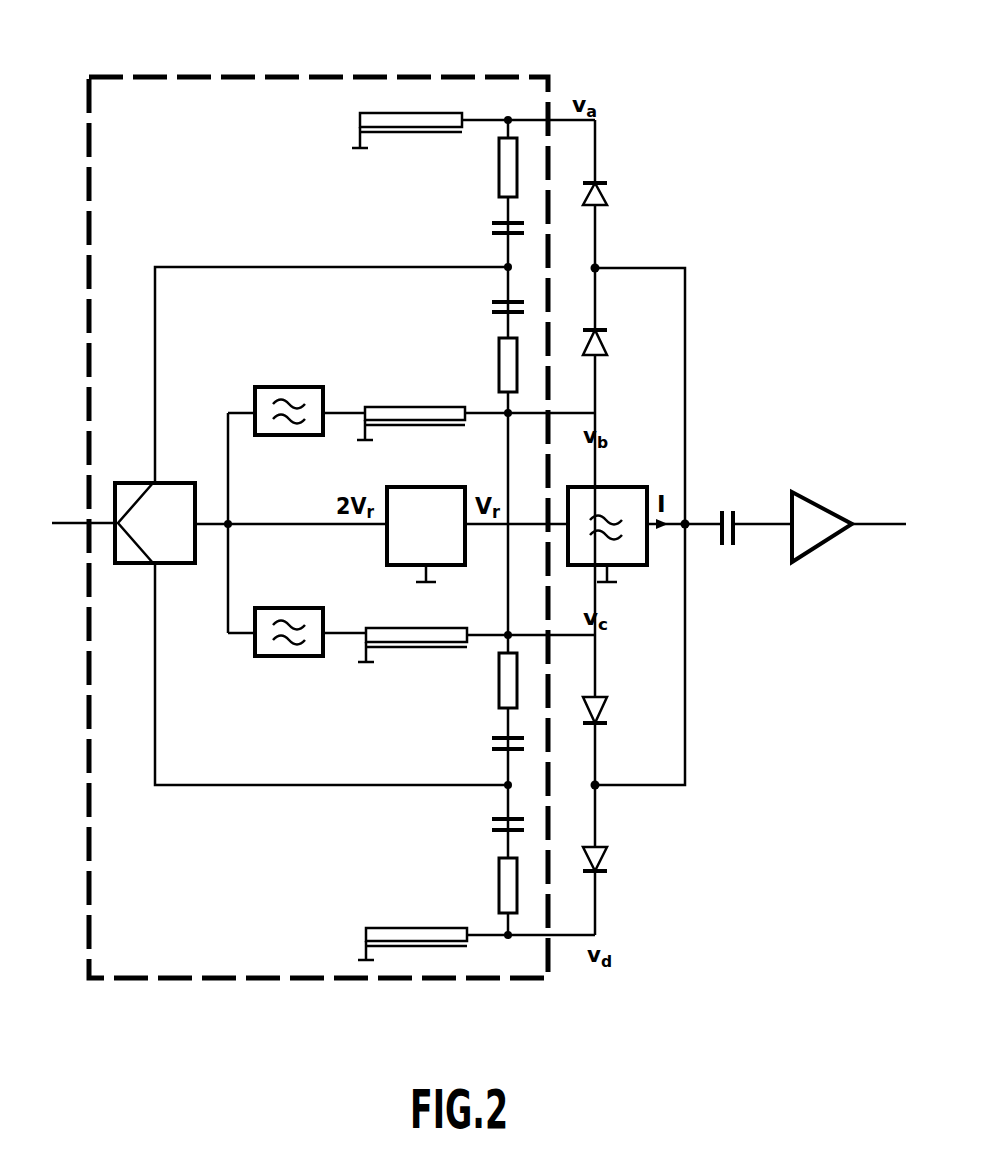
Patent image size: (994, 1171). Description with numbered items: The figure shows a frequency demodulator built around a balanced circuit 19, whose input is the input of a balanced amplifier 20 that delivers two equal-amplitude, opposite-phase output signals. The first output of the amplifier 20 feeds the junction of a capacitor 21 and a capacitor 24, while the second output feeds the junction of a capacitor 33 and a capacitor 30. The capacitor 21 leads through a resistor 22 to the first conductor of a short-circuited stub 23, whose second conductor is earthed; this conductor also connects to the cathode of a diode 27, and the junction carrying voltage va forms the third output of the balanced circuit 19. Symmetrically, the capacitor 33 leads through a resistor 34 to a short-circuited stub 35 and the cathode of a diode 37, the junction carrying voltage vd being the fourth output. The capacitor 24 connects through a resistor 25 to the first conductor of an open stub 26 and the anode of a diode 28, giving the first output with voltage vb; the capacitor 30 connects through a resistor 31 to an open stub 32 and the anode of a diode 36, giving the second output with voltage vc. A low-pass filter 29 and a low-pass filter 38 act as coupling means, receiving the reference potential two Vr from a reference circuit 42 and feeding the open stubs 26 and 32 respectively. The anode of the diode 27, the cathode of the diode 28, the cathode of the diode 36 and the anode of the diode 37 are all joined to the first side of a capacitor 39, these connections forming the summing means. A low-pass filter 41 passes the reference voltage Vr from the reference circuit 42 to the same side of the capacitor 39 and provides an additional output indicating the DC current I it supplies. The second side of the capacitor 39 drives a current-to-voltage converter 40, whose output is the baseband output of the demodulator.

The balanced circuit 19 is at (143, 72).
The balanced amplifier 20 is at (173, 483).
The capacitor 21 is at (492, 232).
The resistor 22 is at (498, 168).
The short-circuited stub 23 is at (424, 114).
The capacitor 24 is at (492, 307).
The resistor 25 is at (498, 368).
The open stub 26 is at (424, 407).
The diode 27 is at (605, 196).
The diode 28 is at (606, 344).
The low-pass filter 29 is at (289, 435).
The capacitor 30 is at (492, 744).
The resistor 31 is at (498, 684).
The open stub 32 is at (426, 627).
The capacitor 33 is at (492, 825).
The resistor 34 is at (498, 889).
The short-circuited stub 35 is at (427, 928).
The diode 36 is at (605, 705).
The diode 37 is at (605, 853).
The low-pass filter 38 is at (289, 656).
The capacitor 39 is at (726, 511).
The current-to-voltage converter 40 is at (811, 497).
The low-pass filter 41 is at (624, 487).
The reference circuit 42 is at (387, 548).